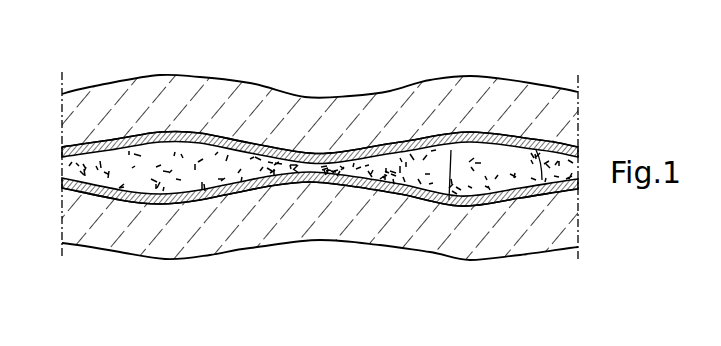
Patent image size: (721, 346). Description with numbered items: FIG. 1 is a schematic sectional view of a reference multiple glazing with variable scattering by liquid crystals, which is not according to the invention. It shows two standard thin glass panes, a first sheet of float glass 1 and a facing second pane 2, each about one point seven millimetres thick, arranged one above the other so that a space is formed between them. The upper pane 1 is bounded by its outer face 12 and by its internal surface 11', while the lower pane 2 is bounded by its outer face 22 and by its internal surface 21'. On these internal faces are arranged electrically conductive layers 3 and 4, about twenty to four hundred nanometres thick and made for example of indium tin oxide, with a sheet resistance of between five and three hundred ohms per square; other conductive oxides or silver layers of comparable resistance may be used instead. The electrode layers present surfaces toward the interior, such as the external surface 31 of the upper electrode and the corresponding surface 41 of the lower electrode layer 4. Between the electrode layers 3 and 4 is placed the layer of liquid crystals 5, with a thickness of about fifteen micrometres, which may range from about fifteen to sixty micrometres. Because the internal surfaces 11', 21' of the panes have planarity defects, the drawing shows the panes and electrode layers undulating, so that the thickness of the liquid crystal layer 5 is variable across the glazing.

The sheet of float glass 1 is at (98, 93).
The outer surface of first layer 12 is at (160, 75).
The internal surface 11' is at (320, 125).
The electrically conductive layer 3 is at (62, 156).
The electrically conductive layer 4 is at (62, 178).
The layer of liquid crystals 5 is at (419, 160).
The portion of second coating layer 41 is at (540, 150).
The external surface 31 is at (449, 200).
The second layer 2 is at (125, 245).
The outer surface of second layer 22 is at (195, 259).
The internal surface 21' is at (320, 197).